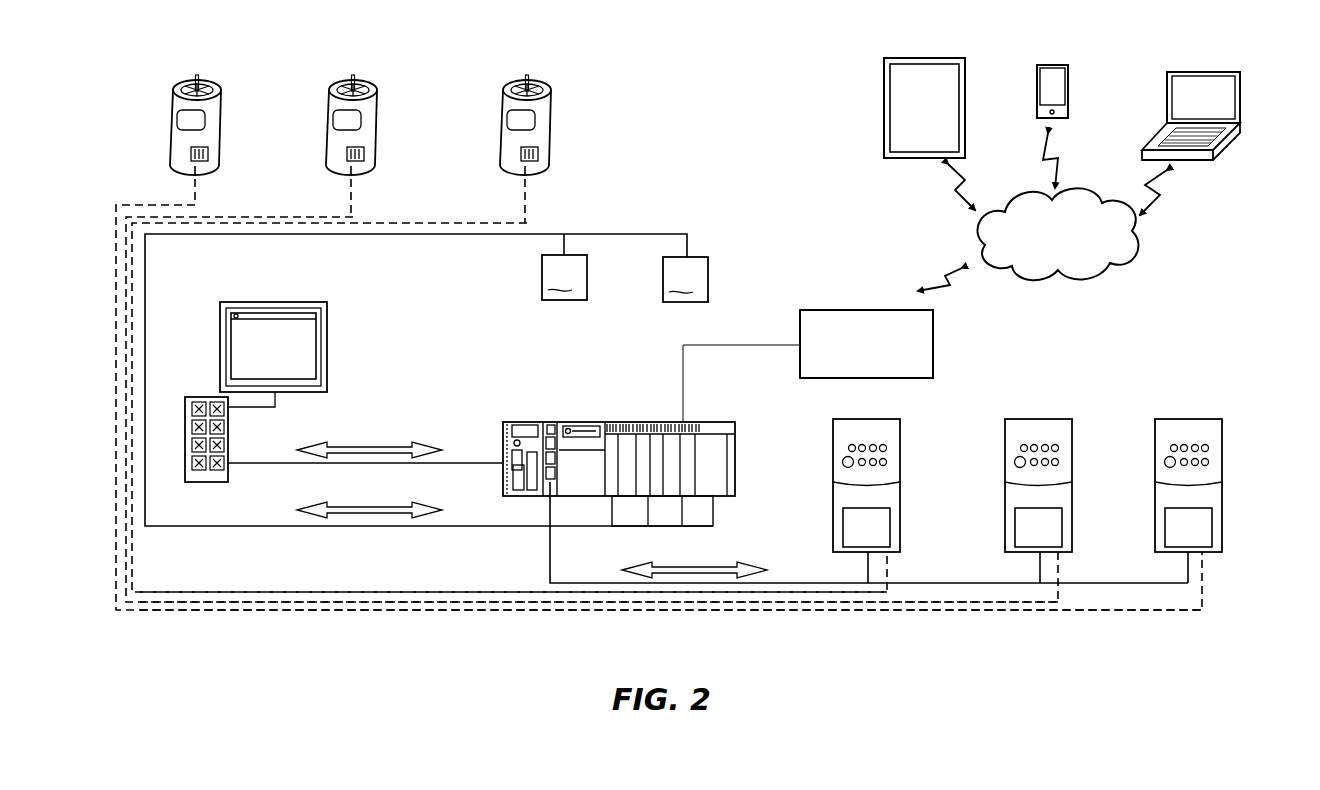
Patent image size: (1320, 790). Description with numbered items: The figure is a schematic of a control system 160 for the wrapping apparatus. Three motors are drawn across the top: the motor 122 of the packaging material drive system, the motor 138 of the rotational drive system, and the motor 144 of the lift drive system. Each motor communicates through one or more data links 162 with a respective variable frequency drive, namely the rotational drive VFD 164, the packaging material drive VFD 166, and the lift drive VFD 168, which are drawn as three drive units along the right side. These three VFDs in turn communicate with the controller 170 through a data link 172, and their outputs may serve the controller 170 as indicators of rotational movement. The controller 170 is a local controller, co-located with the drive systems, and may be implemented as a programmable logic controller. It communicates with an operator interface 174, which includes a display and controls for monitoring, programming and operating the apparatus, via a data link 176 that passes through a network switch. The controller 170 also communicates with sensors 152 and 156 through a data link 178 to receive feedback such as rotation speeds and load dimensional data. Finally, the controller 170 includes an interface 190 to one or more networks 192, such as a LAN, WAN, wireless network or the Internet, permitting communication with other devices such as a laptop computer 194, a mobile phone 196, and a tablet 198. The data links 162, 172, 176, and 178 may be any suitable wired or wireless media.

The motor 122 is at (502, 124).
The motor 138 is at (328, 124).
The motor 144 is at (170, 122).
The sensor 152 is at (564, 267).
The sensor 156 is at (685, 279).
The control system 160 is at (292, 628).
The data links 162 is at (858, 611).
The rotational drive variable frequency drive 164 is at (1072, 486).
The packaging material drive variable frequency drive 166 is at (900, 486).
The lift drive variable frequency drive 168 is at (1155, 485).
The controller 170 is at (741, 422).
The data link 172 is at (962, 582).
The operator interface 174 is at (328, 340).
The data link 176 is at (474, 462).
The data link 178 is at (645, 233).
The interface 190 is at (933, 345).
The network 192 is at (1097, 190).
The laptop computer 194 is at (1243, 106).
The mobile phone 196 is at (1070, 92).
The tablet 198 is at (967, 86).